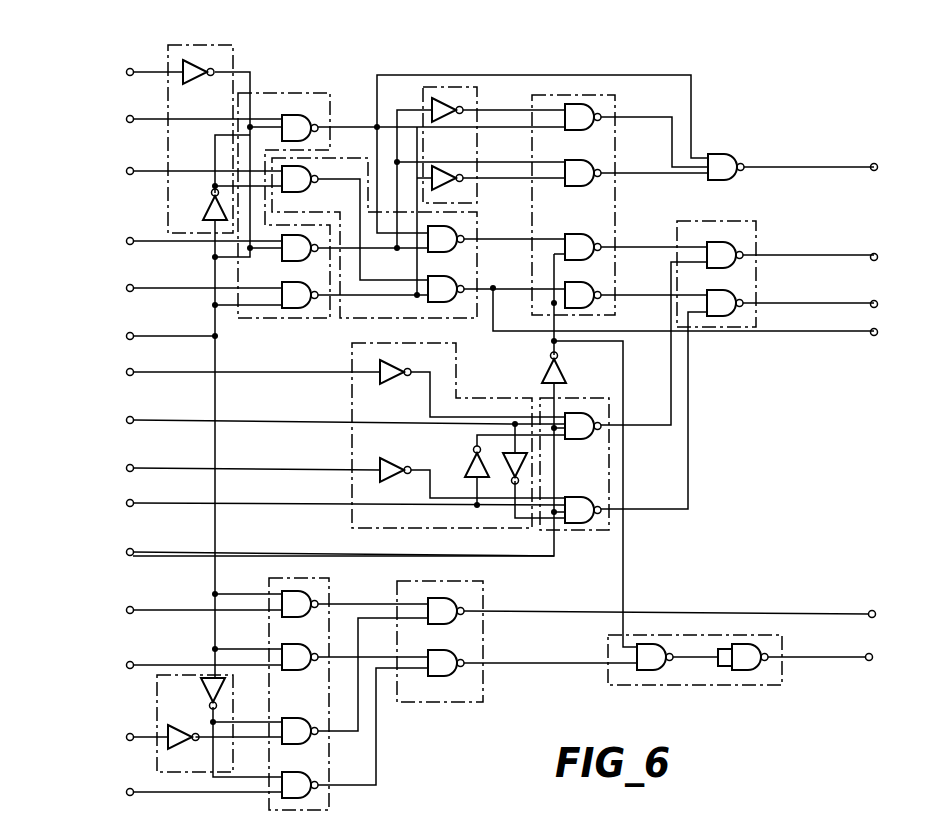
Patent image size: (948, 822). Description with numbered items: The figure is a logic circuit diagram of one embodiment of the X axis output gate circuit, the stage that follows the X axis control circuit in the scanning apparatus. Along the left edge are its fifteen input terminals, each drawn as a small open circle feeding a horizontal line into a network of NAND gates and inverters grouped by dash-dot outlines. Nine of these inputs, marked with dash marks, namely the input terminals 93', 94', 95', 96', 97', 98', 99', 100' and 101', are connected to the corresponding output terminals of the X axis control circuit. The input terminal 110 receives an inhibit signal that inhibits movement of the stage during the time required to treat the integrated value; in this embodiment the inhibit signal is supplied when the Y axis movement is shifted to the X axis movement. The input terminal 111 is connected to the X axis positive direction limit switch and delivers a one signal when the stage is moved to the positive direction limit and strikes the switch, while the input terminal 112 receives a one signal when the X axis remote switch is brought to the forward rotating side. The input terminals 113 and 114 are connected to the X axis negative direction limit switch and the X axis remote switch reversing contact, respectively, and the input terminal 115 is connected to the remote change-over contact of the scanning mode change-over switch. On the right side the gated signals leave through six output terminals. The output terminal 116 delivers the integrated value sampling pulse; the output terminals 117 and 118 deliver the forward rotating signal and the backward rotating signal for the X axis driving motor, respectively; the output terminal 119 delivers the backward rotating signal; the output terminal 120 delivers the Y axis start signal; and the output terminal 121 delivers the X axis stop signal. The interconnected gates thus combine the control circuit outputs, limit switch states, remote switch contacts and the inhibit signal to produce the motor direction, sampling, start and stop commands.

The input terminal 110 is at (127, 69).
The input terminal 95' is at (186, 104).
The input terminal 96' is at (186, 156).
The input terminal 98' is at (187, 222).
The input terminal 99' is at (185, 271).
The input terminal 101' is at (149, 320).
The input terminal 111 is at (127, 369).
The input terminal 112 is at (127, 417).
The input terminal 113 is at (128, 464).
The input terminal 114 is at (128, 499).
The input terminal 115 is at (128, 548).
The input terminal 94' is at (185, 592).
The input terminal 100' is at (185, 647).
The input terminal 93' is at (186, 714).
The input terminal 97' is at (183, 771).
The output terminal 116 is at (875, 163).
The output terminal 117 is at (875, 253).
The output terminal 118 is at (886, 296).
The output terminal 119 is at (875, 336).
The output terminal 120 is at (880, 606).
The output terminal 121 is at (872, 655).